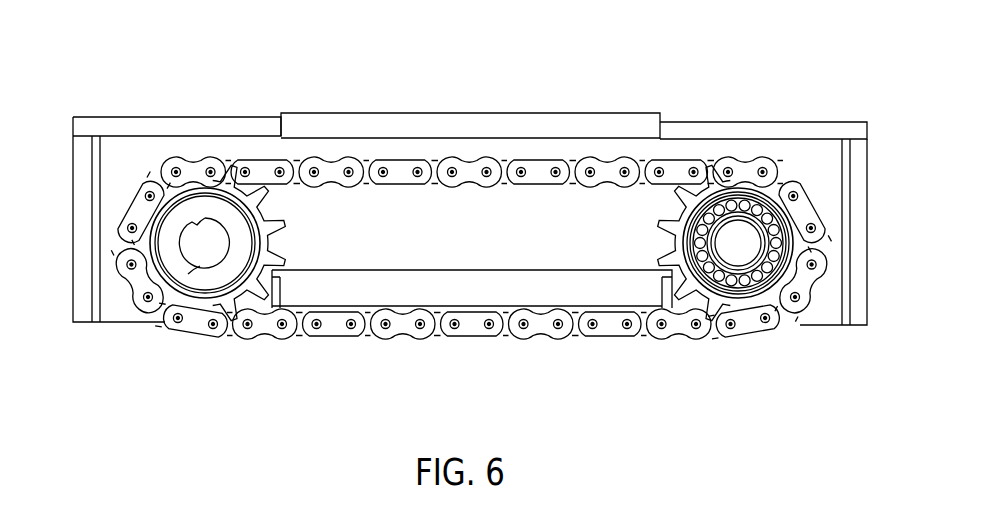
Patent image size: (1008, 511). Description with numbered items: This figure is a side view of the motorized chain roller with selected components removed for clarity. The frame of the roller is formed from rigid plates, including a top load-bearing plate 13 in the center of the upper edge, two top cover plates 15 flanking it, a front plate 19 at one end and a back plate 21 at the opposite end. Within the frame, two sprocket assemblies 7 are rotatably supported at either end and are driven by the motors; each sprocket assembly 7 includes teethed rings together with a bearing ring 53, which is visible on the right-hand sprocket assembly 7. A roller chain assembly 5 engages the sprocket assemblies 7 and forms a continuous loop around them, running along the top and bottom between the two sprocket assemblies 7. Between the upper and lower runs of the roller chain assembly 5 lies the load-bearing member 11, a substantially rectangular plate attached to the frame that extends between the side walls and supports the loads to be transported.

The roller chain assembly 5 is at (540, 330).
The sprocket assembly 7 is at (198, 275).
The load-bearing member 11 is at (438, 277).
The top load-bearing plate 13 is at (473, 113).
The top cover plate 15 is at (260, 118).
The front plate 19 is at (870, 314).
The back plate 21 is at (73, 167).
The bearing ring 53 is at (727, 287).